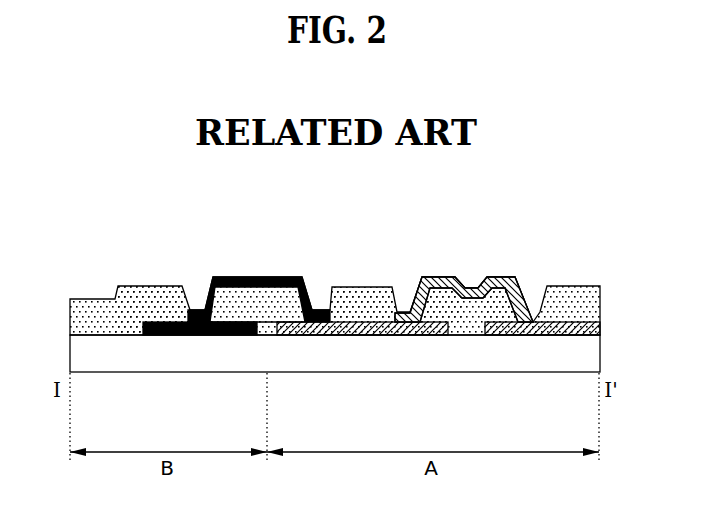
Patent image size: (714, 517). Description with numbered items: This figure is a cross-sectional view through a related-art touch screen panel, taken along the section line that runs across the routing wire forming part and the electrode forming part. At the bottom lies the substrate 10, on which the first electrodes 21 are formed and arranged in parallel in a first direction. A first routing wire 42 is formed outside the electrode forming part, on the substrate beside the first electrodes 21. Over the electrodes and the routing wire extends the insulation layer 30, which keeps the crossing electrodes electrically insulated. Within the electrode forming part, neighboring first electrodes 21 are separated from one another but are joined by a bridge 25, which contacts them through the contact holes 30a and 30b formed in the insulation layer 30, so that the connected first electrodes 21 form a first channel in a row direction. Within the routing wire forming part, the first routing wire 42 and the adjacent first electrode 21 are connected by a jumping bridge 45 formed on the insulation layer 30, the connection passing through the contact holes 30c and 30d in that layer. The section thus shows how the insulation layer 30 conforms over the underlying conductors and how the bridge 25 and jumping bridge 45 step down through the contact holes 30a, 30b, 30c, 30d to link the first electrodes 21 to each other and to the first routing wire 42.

The substrate 10 is at (450, 353).
The first electrode 21 is at (360, 335).
The bridge 25 is at (483, 277).
The insulation layer 30 is at (578, 290).
The contact hole 30a is at (397, 290).
The contact hole 30b is at (532, 290).
The contact hole 30c is at (190, 290).
The contact hole 30d is at (322, 290).
The first routing wire 42 is at (167, 335).
The jumping bridge 45 is at (255, 277).